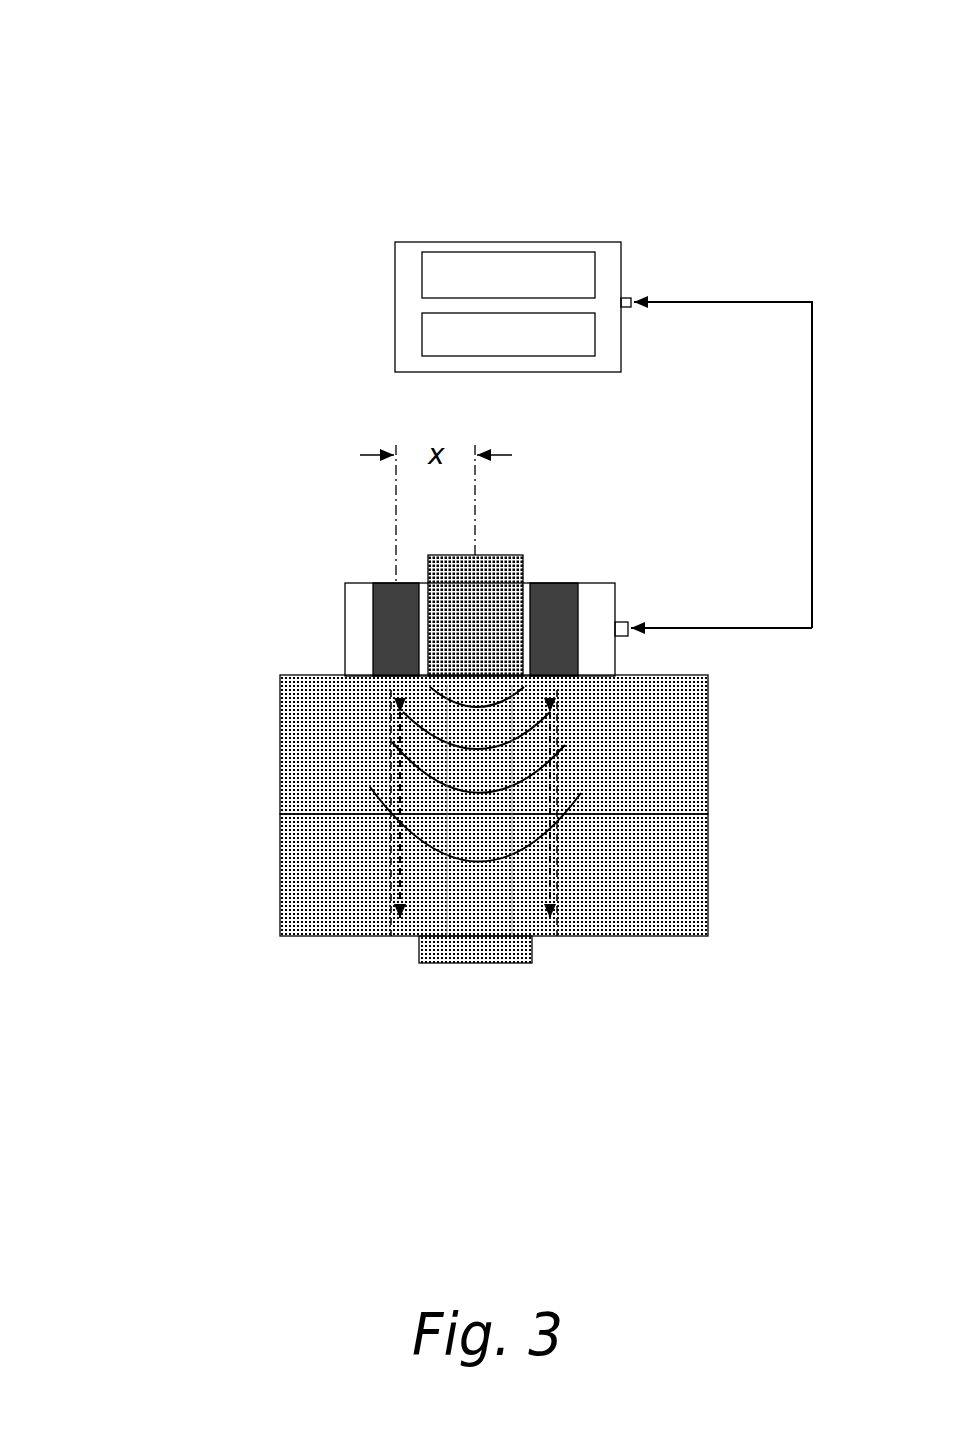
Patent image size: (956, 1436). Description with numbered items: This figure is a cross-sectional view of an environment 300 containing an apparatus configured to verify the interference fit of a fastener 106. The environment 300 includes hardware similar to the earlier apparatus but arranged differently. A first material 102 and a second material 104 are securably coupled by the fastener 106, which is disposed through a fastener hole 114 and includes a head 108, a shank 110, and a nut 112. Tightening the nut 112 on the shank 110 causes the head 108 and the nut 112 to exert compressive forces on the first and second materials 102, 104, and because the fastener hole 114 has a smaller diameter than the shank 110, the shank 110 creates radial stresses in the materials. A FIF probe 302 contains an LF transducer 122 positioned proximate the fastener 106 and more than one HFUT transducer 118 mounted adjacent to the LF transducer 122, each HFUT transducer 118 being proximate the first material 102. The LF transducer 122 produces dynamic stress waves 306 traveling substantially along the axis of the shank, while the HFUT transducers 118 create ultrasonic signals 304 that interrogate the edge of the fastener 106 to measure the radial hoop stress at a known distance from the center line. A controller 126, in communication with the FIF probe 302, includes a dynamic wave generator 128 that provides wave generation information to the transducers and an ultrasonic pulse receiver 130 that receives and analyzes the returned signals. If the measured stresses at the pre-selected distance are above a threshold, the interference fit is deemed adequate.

The environment 300 is at (157, 82).
The controller 126 is at (415, 242).
The dynamic wave generator 128 is at (422, 275).
The ultrasonic pulse receiver 130 is at (422, 334).
The FIF probe 302 is at (345, 645).
The HFUT transducer 118 is at (375, 605).
The LF transducer 122 is at (497, 555).
The first material 102 is at (708, 770).
The second material 104 is at (708, 862).
The nut 112 is at (512, 963).
The head 108 is at (418, 693).
The fastener 106 is at (440, 748).
The shank 110 is at (455, 778).
The fastener hole 114 is at (447, 890).
The ultrasonic signals 304 is at (396, 944).
The dynamic stress waves 306 is at (475, 868).